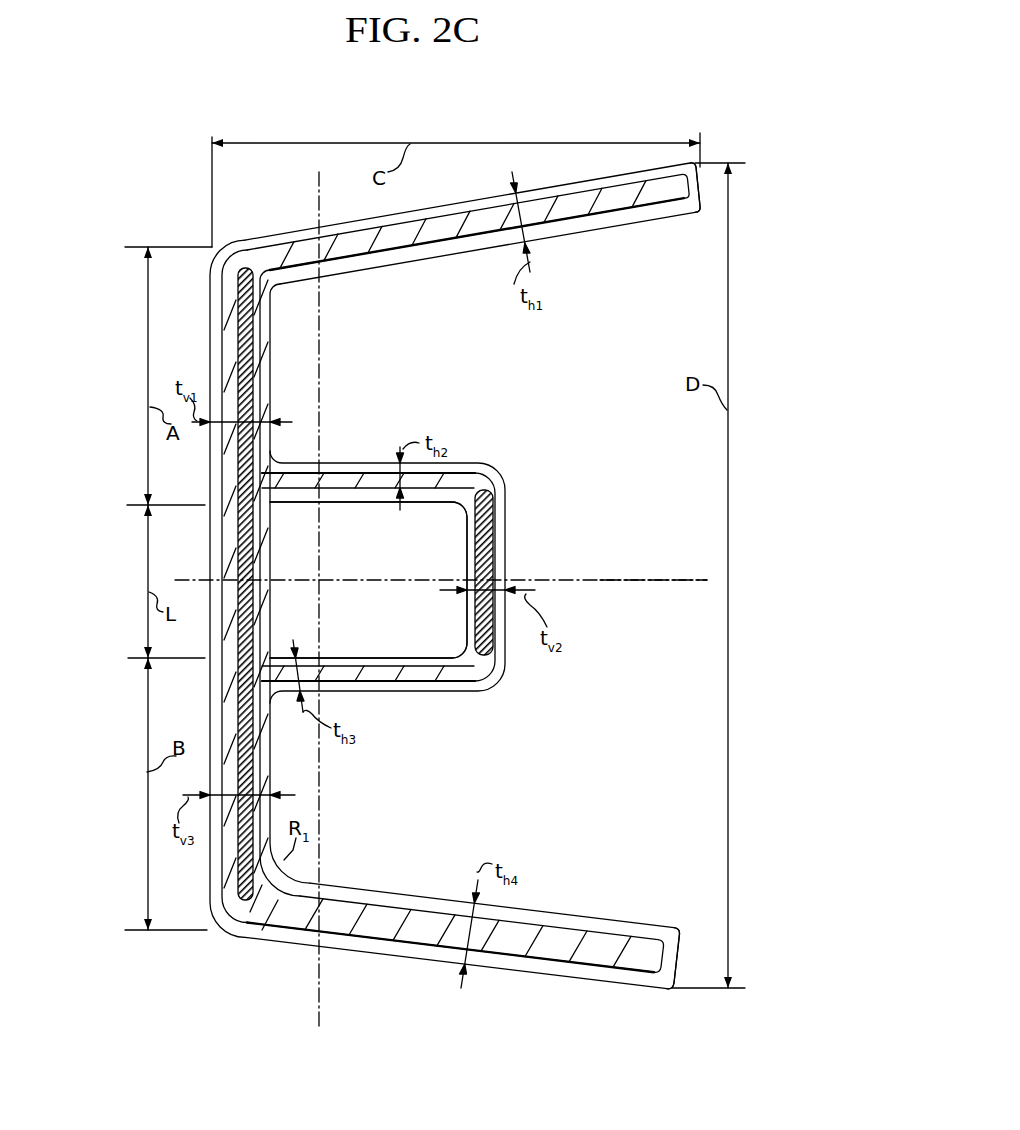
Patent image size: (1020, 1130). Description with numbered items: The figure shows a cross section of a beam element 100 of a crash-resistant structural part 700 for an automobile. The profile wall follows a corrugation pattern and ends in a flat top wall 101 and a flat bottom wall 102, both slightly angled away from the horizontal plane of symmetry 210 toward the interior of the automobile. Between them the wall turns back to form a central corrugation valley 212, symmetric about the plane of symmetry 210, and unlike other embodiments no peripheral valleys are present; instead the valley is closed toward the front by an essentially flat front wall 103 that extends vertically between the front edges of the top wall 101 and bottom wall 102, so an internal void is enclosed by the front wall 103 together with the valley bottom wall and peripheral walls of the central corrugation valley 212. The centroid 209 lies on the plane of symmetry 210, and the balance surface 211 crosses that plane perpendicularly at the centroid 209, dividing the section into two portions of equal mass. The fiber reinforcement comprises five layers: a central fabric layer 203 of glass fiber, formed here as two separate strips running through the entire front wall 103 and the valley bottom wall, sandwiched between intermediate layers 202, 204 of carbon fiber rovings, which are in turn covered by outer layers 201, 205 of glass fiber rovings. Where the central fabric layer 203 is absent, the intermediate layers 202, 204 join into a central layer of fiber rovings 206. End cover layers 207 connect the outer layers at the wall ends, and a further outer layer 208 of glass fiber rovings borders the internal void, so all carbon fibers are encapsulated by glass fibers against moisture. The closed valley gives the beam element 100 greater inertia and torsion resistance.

The crash-resistant structural part 700 is at (178, 181).
The beam element 100 is at (507, 968).
The top wall 101 is at (592, 262).
The bottom wall 102 is at (576, 889).
The front wall 103 is at (198, 561).
The outer layer 201 is at (429, 262).
The intermediate layer 202 is at (265, 356).
The central fabric layer 203 is at (256, 397).
The intermediate layer 204 is at (224, 356).
The outer layer 205 is at (423, 208).
The central layer of fiber rovings 206 is at (638, 208).
The end cover layers 207 is at (700, 196).
The further outer layer 208 is at (378, 654).
The centroid 209 is at (322, 582).
The horizontal plane of symmetry 210 is at (685, 582).
The balance surface 211 is at (317, 983).
The central corrugation valley 212 is at (376, 545).